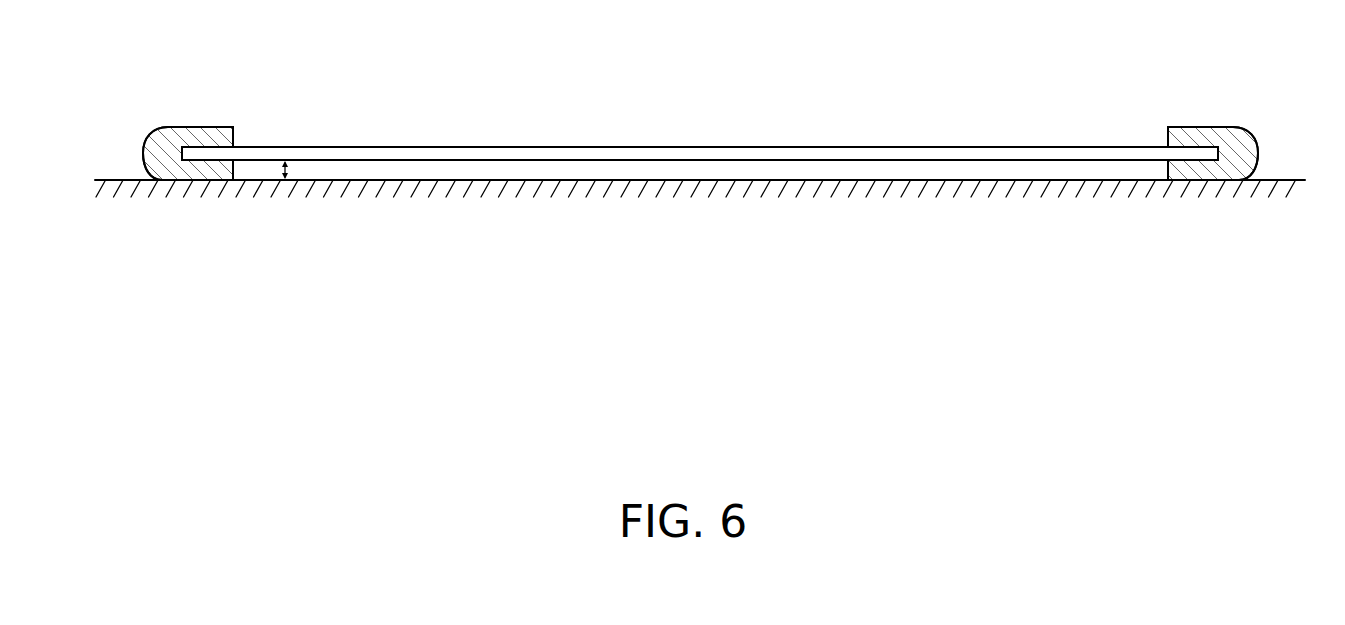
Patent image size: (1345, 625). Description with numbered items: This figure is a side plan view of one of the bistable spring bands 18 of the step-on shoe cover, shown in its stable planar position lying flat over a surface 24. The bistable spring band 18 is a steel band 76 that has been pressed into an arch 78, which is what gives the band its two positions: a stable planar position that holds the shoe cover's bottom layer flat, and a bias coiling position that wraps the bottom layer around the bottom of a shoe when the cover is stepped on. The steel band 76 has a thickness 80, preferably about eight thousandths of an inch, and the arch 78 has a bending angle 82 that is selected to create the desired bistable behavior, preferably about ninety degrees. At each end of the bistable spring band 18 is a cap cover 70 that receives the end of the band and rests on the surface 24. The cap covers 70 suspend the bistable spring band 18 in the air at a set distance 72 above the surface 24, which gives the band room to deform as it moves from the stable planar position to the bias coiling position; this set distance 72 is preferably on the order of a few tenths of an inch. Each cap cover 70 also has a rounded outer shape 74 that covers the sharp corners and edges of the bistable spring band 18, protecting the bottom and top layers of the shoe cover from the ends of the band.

The bistable spring band 18 is at (578, 150).
The steel band 76 is at (578, 150).
The surface 24 is at (103, 180).
The cap cover 70 is at (155, 130).
The set distance 72 is at (288, 168).
The rounded outer shape 74 is at (122, 143).
The arch 78 is at (815, 132).
The thickness 80 is at (744, 192).
The bending angle 82 is at (968, 174).